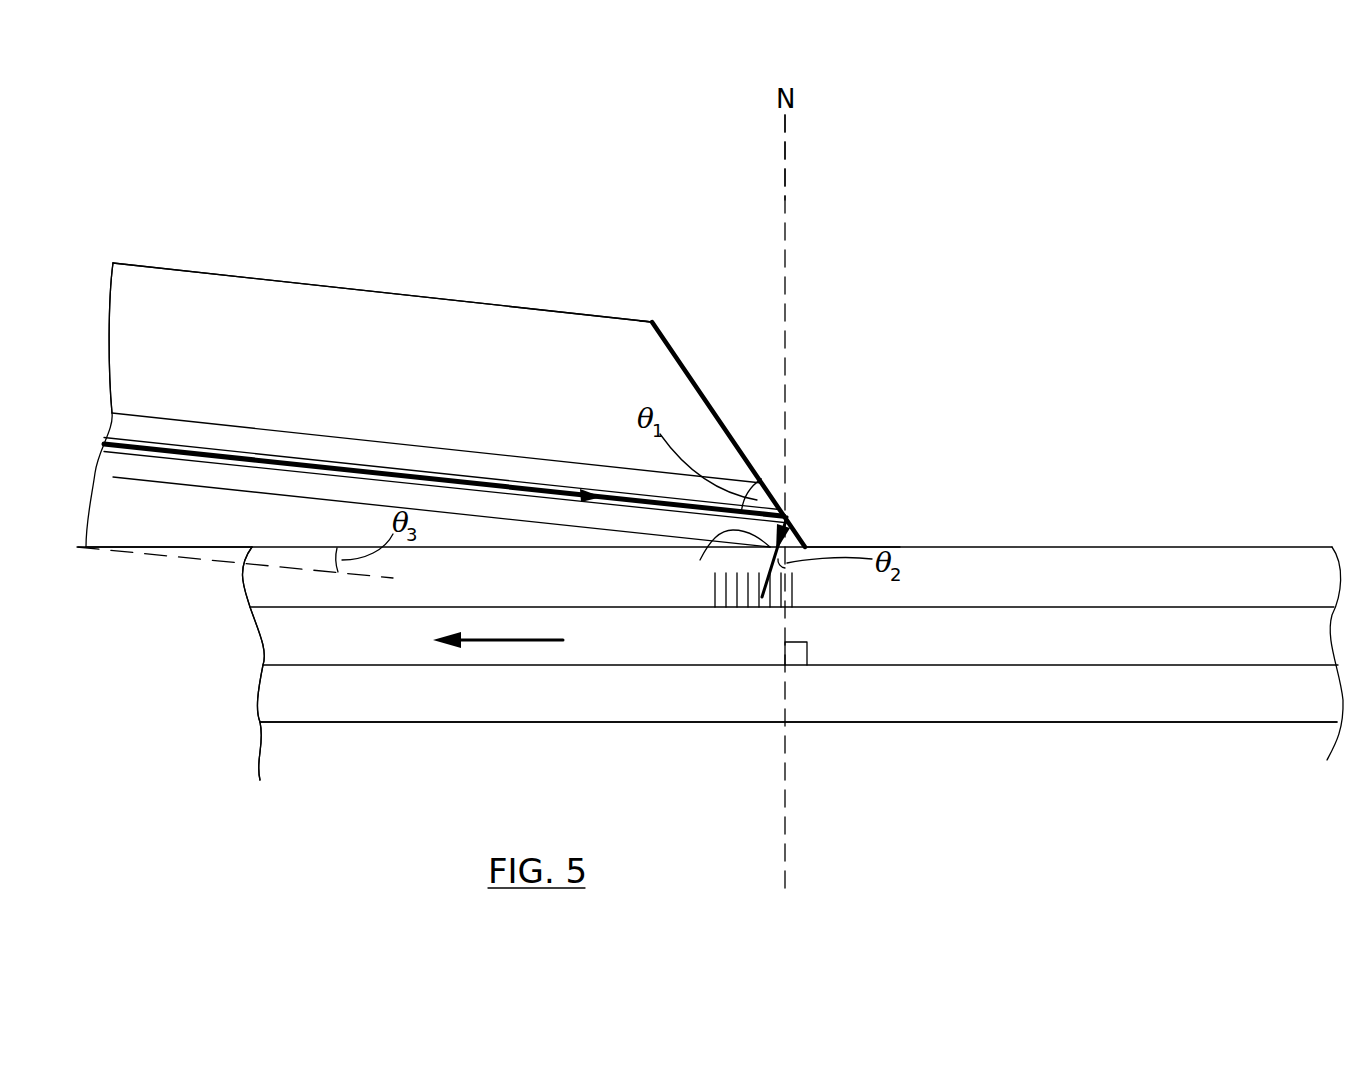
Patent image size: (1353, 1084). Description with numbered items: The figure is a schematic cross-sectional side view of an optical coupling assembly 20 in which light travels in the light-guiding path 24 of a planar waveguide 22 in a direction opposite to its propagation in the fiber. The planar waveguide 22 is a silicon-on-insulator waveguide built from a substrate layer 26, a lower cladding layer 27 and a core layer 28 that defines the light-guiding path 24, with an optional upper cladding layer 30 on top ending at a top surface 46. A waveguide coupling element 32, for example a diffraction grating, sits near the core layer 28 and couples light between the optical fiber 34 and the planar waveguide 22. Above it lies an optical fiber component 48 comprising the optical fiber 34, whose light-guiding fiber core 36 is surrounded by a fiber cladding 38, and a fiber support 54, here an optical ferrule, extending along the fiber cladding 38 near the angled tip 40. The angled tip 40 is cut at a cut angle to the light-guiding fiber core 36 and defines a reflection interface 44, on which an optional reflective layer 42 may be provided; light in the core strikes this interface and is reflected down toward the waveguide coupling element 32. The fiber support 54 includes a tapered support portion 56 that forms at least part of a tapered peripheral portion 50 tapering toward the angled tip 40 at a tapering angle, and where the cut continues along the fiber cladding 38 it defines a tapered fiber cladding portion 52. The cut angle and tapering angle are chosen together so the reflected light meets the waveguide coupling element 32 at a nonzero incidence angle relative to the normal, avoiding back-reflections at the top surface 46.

The optical coupling assembly 20 is at (951, 251).
The planar waveguide 22 is at (1262, 509).
The light-guiding path 24 is at (255, 640).
The substrate layer 26 is at (323, 775).
The lower cladding layer 27 is at (325, 710).
The core layer 28 is at (1285, 652).
The upper cladding layer 30 is at (530, 591).
The waveguide coupling element 32 is at (792, 588).
The optical fiber 34 is at (473, 262).
The light-guiding fiber core 36 is at (129, 441).
The fiber cladding 38 is at (122, 464).
The angled tip 40 is at (906, 370).
The reflective layer 42 is at (676, 356).
The reflection interface 44 is at (653, 328).
The top surface 46 is at (1008, 546).
The optical fiber component 48 is at (400, 259).
The tapered peripheral portion 50 is at (163, 570).
The tapered fiber cladding portion 52 is at (700, 560).
The fiber support 54 is at (194, 271).
The tapered support portion 56 is at (172, 531).